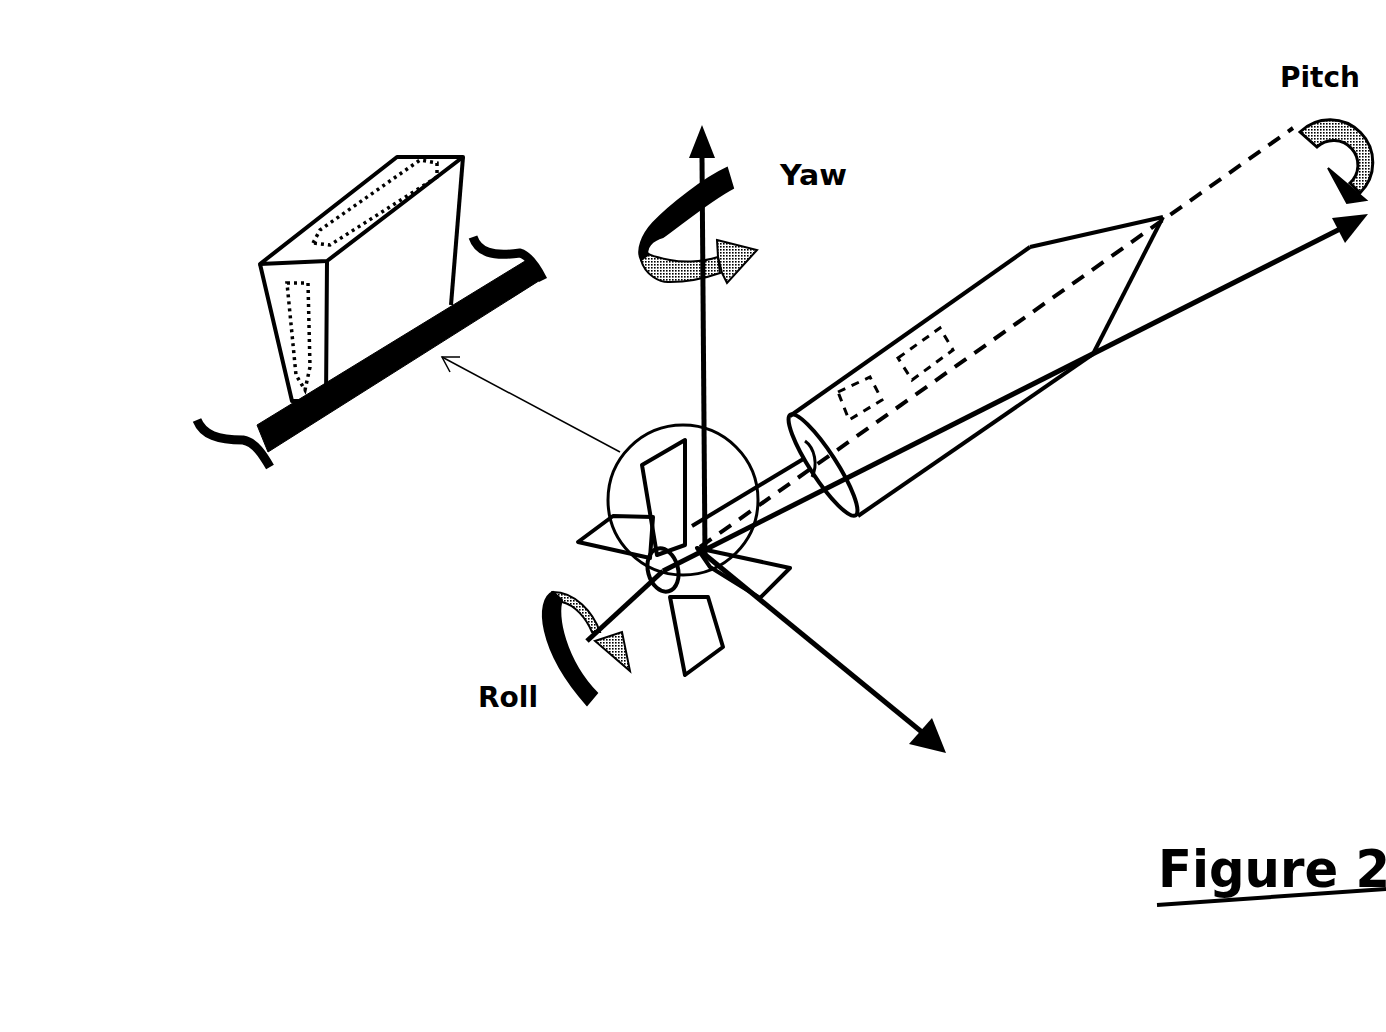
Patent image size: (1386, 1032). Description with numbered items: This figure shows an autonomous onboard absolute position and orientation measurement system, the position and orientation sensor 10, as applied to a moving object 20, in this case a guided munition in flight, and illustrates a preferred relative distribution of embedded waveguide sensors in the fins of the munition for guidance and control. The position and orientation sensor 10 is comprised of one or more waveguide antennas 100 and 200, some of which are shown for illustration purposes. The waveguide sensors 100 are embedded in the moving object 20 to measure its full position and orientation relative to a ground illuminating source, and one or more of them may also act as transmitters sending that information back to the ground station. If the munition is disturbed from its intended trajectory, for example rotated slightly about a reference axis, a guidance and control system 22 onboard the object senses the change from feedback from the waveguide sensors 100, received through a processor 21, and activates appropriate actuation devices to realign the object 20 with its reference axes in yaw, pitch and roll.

The position and orientation sensor 10 is at (570, 532).
The object 20 is at (1050, 227).
The processor 21 is at (840, 392).
The guidance and control system 22 is at (903, 347).
The waveguide antenna 100 is at (280, 324).
The waveguide antenna 200 is at (362, 197).